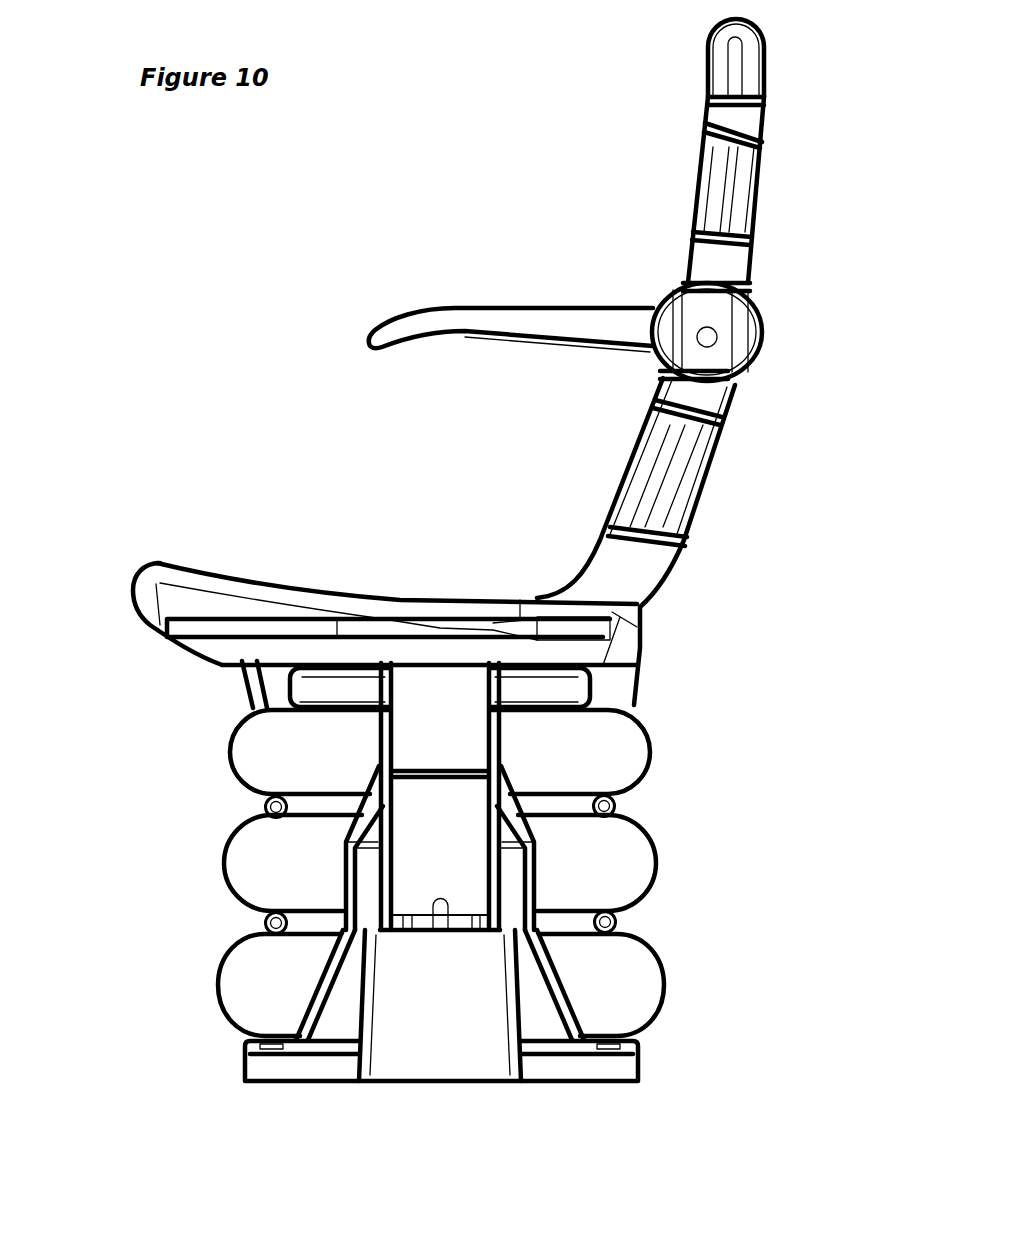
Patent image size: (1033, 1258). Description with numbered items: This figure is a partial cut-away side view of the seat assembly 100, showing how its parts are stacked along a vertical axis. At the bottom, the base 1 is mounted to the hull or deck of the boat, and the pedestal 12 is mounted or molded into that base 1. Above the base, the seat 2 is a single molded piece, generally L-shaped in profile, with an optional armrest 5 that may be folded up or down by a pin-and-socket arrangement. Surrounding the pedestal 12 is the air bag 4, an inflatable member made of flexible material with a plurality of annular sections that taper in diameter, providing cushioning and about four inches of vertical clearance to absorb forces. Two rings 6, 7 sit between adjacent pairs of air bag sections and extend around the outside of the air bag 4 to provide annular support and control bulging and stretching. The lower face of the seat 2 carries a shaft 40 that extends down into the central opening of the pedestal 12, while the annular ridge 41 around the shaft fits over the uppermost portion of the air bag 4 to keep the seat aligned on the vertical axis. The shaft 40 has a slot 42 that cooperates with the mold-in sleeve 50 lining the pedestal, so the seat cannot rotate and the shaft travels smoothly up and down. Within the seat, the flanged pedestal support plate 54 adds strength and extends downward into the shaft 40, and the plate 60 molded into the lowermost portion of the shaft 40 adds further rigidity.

The assembly 100 is at (278, 215).
The seat 2 is at (710, 113).
The armrest 5 is at (613, 320).
The flanged pedestal support plate 54 is at (430, 713).
The annular ridge 41 is at (273, 683).
The slot 42 is at (397, 793).
The air bag 4 is at (648, 738).
The ring 7 is at (258, 805).
The mold-in sleeve 50 is at (615, 812).
The pedestal 12 is at (340, 862).
The plate 60 is at (455, 912).
The ring 6 is at (260, 921).
The shaft 40 is at (393, 927).
The base 1 is at (638, 1058).